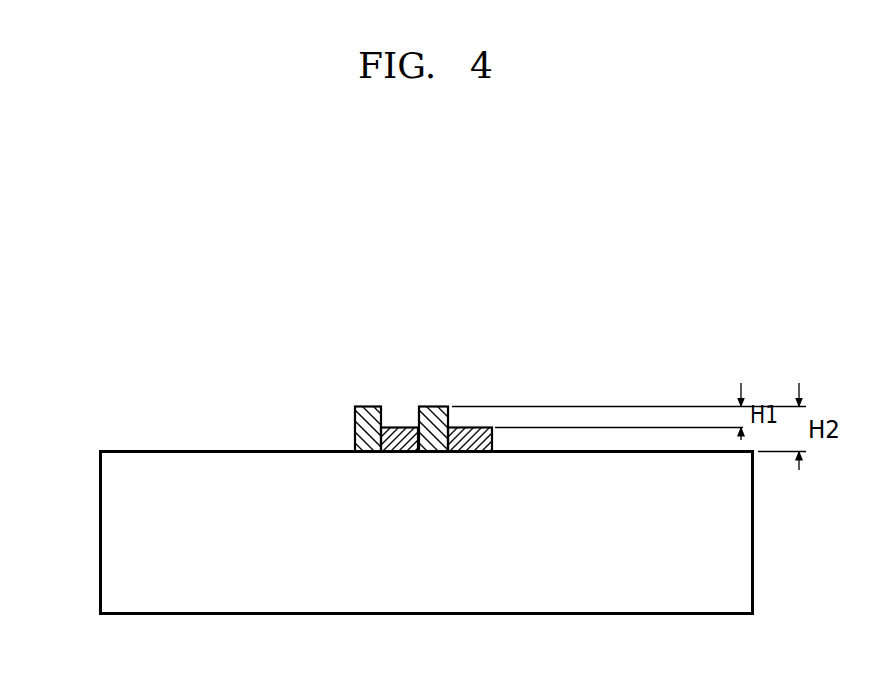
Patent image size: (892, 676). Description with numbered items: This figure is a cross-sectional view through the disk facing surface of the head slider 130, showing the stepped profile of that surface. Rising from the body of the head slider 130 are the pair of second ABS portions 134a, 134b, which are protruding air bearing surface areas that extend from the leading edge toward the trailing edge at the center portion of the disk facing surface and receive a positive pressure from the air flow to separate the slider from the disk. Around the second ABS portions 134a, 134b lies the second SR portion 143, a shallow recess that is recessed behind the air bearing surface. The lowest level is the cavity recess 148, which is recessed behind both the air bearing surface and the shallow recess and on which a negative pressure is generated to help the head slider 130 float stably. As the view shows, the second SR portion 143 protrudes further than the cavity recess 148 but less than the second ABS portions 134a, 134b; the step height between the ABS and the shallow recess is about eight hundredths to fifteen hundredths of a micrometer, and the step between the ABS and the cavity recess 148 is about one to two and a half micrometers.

The head slider 130 is at (130, 375).
The cavity recess 148 is at (213, 450).
The second ABS portion 134a is at (363, 406).
The second ABS portion 134b is at (435, 406).
The second SR portion 143 is at (398, 427).